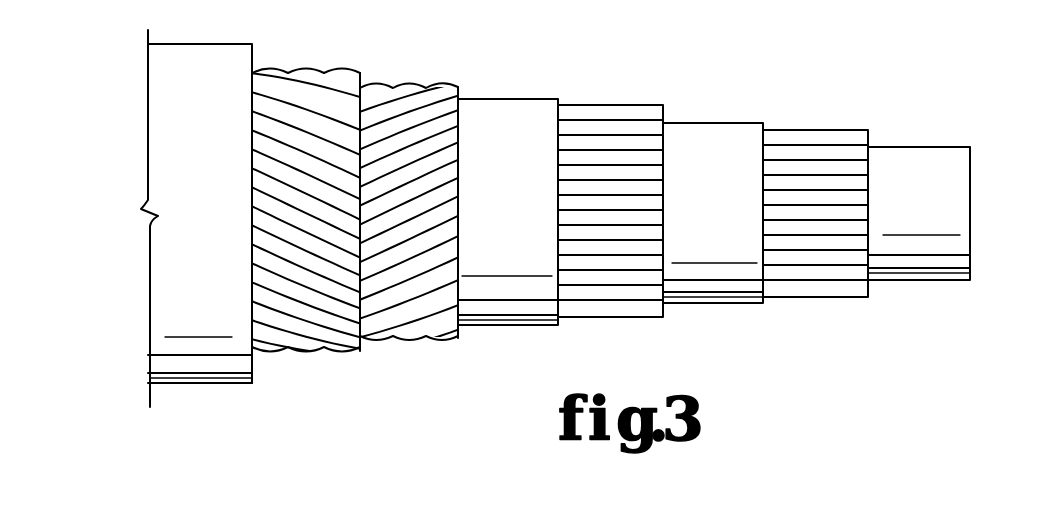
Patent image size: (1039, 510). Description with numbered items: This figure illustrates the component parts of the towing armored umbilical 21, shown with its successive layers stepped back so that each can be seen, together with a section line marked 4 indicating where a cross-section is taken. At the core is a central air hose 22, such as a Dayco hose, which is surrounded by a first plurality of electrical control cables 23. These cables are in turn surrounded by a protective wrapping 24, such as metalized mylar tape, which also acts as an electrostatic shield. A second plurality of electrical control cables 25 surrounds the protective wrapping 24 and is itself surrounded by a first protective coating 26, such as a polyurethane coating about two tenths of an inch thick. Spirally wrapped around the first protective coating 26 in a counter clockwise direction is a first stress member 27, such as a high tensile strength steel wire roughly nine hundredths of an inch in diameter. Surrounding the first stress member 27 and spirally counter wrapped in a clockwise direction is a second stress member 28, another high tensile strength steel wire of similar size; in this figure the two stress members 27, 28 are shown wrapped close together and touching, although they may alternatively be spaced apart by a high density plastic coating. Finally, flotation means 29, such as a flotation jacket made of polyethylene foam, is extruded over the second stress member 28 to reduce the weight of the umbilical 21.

The towing armored umbilical 21 is at (738, 113).
The central air hose 22 is at (910, 255).
The first plurality of electrical control cables 23 is at (805, 275).
The protective wrapping 24 is at (702, 288).
The second plurality of electrical control cables 25 is at (598, 305).
The first protective coating 26 is at (490, 298).
The first stress member 27 is at (397, 318).
The second stress member 28 is at (300, 342).
The flotation means 29 is at (185, 367).
The section line 4- 4 is at (968, 388).